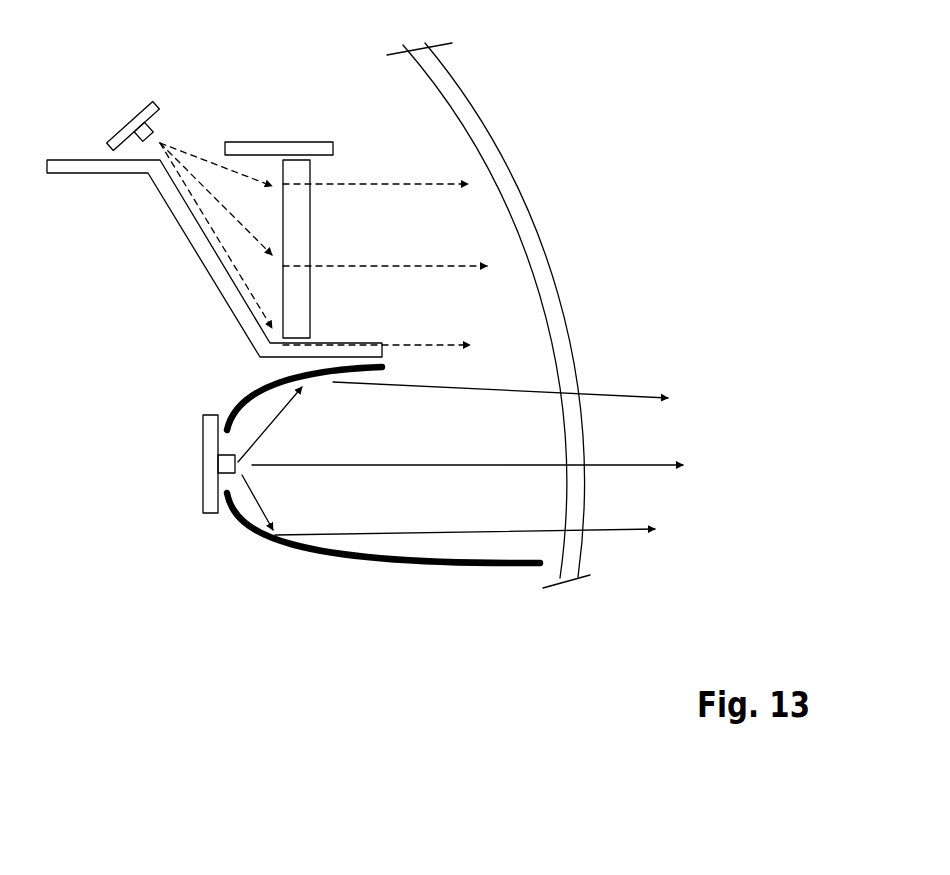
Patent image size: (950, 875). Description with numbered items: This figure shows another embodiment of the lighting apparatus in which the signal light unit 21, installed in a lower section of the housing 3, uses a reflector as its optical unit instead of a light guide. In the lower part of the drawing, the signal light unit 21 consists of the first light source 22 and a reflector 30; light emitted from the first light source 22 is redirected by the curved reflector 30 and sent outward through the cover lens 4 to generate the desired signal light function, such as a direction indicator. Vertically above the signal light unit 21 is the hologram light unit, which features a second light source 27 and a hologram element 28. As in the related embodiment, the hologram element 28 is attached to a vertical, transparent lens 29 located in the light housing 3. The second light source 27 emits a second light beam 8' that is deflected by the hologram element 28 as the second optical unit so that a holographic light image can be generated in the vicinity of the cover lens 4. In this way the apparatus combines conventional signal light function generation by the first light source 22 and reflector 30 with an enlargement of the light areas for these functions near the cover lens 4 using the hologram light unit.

The second light source 27 is at (137, 113).
The hologram element 28 is at (282, 175).
The transparent lens 29 is at (310, 175).
The second light beam 8' is at (335, 202).
The housing 3 is at (443, 241).
The cover lens 4 is at (550, 291).
The first light source 22 is at (202, 488).
The reflector 30 is at (403, 568).
The signal light unit 21 is at (310, 595).